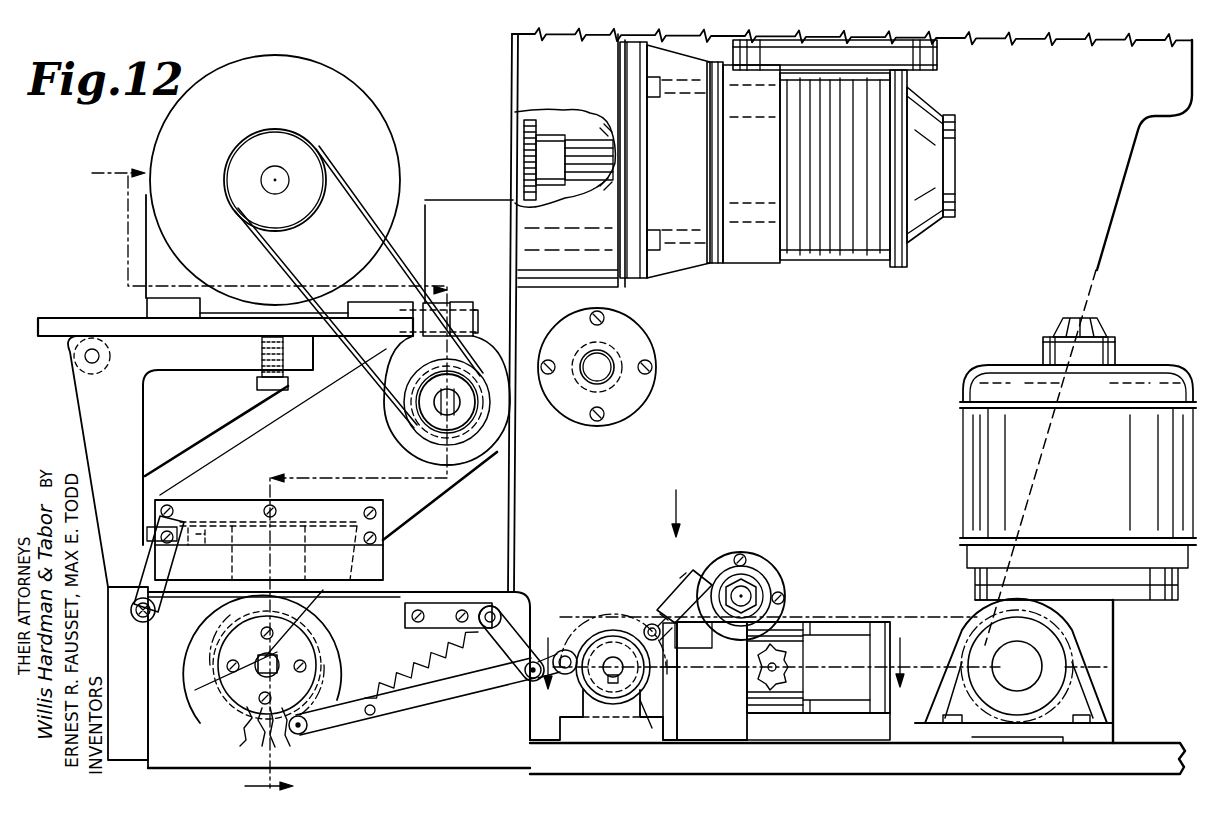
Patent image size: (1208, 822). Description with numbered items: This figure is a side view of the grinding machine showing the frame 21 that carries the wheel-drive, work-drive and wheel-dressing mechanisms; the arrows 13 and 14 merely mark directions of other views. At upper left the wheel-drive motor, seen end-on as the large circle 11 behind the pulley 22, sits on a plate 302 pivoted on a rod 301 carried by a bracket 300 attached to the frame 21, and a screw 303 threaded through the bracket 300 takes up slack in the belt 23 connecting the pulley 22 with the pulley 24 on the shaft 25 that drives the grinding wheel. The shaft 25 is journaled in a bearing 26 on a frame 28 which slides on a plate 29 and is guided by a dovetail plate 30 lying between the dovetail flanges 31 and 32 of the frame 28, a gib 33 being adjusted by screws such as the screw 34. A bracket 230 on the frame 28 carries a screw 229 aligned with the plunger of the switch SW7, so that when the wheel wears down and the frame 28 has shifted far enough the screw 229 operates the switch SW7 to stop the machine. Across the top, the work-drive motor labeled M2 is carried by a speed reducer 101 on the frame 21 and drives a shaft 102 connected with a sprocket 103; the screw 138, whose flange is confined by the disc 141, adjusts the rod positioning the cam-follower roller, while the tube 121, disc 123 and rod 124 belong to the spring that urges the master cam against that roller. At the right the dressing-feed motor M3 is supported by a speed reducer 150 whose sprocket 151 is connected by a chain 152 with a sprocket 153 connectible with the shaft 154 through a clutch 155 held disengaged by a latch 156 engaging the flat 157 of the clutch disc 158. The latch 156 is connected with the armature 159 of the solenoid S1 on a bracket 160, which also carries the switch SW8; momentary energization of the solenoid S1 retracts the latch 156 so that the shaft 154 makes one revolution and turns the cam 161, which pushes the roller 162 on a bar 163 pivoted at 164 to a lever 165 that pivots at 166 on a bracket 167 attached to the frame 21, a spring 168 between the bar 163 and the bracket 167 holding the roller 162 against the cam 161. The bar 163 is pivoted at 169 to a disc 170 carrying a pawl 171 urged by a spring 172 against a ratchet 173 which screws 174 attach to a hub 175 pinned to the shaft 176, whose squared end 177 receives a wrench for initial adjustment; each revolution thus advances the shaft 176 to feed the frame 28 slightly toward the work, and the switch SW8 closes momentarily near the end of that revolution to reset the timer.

The grinding wheel 11 is at (218, 68).
The section line 14- 14 is at (290, 478).
The pulley 22 is at (296, 217).
The belt 23 is at (355, 212).
The plate 302 is at (65, 318).
The rod 301 is at (100, 356).
The bracket 300 is at (74, 386).
The screw 303 is at (257, 386).
The pulley 24 is at (408, 436).
The shaft 25 is at (452, 405).
The bearing 26 is at (472, 445).
The frame 28 is at (420, 504).
The disc 141 is at (648, 337).
The screw 138 is at (604, 374).
The section line 13- 13 is at (824, 587).
The bracket 230 is at (150, 512).
The dovetail plate 30 is at (237, 522).
The screw 34 is at (147, 535).
The gib 33 is at (196, 536).
The switch SW7 is at (120, 587).
The dovetail flange 32 is at (210, 553).
The dovetail flange 31 is at (350, 549).
The plate 29 is at (380, 570).
The screw 229 is at (157, 607).
The shaft 176 is at (306, 623).
The bracket 167 is at (405, 608).
The pivot 166 is at (489, 606).
The hub 175 is at (303, 652).
The spring 168 is at (385, 678).
The spring 172 is at (325, 672).
The screws 174 is at (208, 700).
The squared end 177 is at (281, 678).
The disc 170 is at (224, 724).
The ratchet 173 is at (252, 742).
The pawl 171 is at (286, 748).
The pivot 169 is at (304, 733).
The roller 162 is at (564, 650).
The sprocket 153 is at (597, 615).
The cam 161 is at (620, 630).
The lever 165 is at (505, 644).
The pivot 164 is at (526, 690).
The bar 163 is at (466, 708).
The clutch 155 is at (552, 765).
The shaft 154 is at (610, 683).
The disc 158 is at (646, 710).
The bracket 160 is at (713, 733).
The flat 157 is at (677, 681).
The latch 156 is at (711, 681).
The switch SW8 is at (690, 570).
The disc 123 is at (760, 580).
The tube 121 is at (773, 576).
The rod 124 is at (753, 596).
The solenoid S1 is at (832, 622).
The armature 159 is at (790, 664).
The chain 152 is at (912, 617).
The drive motor M2 is at (937, 63).
The motor M3 is at (962, 445).
The speed reducer 101 is at (935, 122).
The shaft 102 is at (588, 140).
The sprocket 103 is at (530, 120).
The speed reducer 150 is at (1113, 646).
The sprocket 151 is at (1062, 652).
The frame 21 is at (1145, 743).